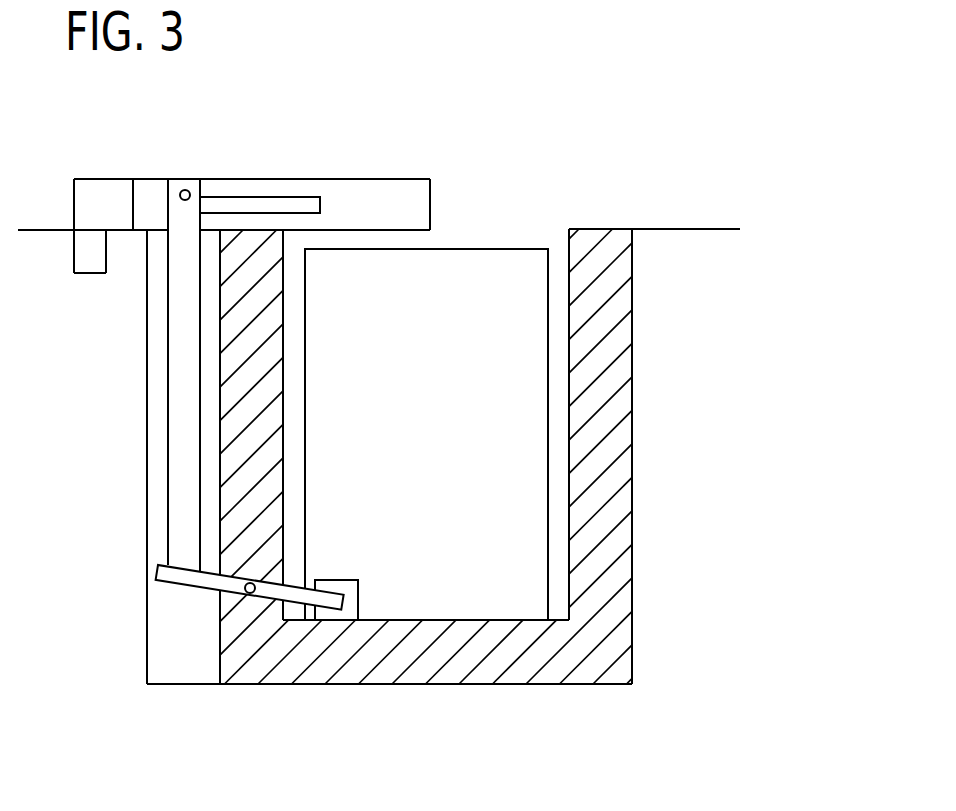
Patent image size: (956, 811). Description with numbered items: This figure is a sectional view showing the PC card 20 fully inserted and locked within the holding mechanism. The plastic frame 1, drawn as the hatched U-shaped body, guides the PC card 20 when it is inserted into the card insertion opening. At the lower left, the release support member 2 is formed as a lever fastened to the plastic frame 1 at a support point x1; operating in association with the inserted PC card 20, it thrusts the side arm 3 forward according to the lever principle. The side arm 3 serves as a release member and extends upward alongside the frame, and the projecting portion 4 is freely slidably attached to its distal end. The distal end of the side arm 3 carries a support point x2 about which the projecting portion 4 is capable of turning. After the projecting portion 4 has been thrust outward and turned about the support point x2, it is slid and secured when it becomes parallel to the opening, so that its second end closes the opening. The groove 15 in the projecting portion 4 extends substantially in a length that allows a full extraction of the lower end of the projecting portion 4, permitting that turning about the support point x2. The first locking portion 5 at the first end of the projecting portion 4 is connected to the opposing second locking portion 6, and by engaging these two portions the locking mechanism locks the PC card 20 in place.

The plastic frame 1 is at (625, 415).
The release support member 2 is at (325, 600).
The side arm 3 is at (168, 413).
The projecting portion 4 is at (405, 179).
The first locking portion 5 is at (82, 178).
The second locking portion 6 is at (86, 274).
The groove 15 is at (207, 204).
The PC card 20 is at (437, 248).
The support point x1 is at (247, 594).
The support point x2 is at (388, 103).